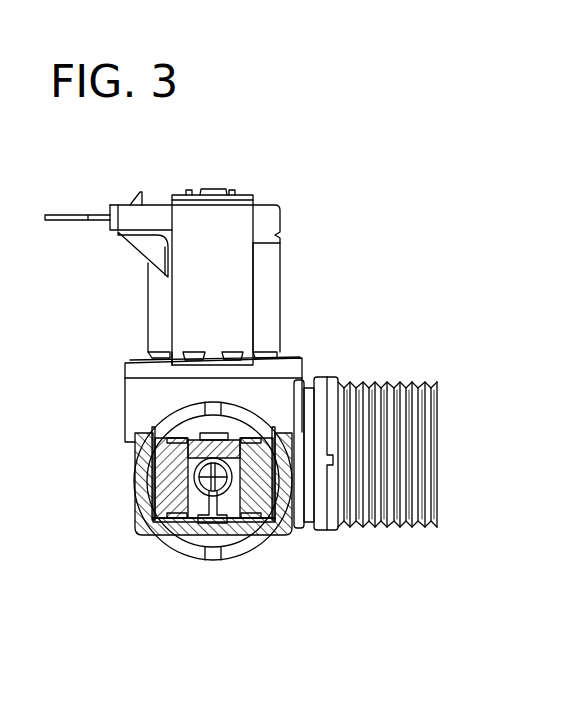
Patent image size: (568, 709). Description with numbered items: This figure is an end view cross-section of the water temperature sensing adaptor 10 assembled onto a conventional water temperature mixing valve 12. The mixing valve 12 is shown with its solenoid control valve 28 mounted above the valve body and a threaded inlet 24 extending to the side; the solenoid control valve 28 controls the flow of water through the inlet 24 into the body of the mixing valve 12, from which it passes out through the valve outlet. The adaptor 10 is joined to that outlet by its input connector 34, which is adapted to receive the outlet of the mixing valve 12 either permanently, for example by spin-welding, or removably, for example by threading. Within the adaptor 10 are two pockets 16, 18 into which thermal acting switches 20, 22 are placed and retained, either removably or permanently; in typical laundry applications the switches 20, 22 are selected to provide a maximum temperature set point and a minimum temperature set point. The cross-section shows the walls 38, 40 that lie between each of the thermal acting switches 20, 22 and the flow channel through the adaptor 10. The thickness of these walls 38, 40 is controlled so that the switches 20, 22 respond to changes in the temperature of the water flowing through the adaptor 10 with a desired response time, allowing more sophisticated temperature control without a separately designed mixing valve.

The water temperature sensing adaptor 10 is at (253, 397).
The water temperature mixing valve 12 is at (285, 387).
The pocket 16 is at (137, 482).
The pocket 18 is at (280, 537).
The thermal acting switch 20 is at (135, 448).
The thermal acting switch 22 is at (255, 487).
The hot water inlet 24 is at (438, 433).
The solenoid control valve 28 is at (223, 190).
The input connector 34 is at (214, 548).
The wall 38 is at (208, 500).
The wall 40 is at (220, 512).